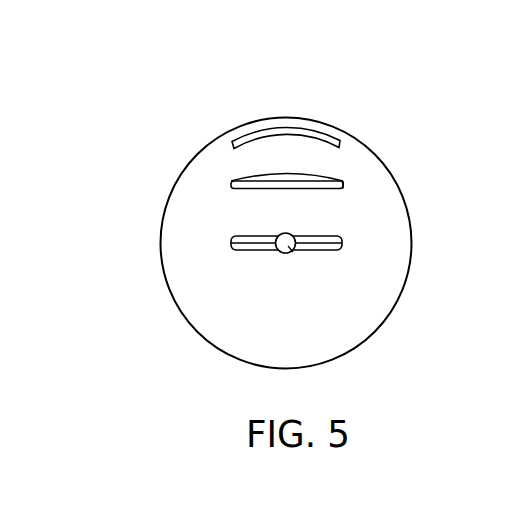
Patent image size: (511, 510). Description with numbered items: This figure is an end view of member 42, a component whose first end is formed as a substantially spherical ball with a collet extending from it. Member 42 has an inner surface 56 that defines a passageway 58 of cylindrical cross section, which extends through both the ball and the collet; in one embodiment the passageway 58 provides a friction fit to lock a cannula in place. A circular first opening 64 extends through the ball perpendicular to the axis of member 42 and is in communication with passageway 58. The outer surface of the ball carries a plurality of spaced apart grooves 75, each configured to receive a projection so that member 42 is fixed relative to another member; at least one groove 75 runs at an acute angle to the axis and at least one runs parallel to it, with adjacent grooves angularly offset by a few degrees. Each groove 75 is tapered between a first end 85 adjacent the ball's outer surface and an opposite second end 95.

The member 42 is at (181, 384).
The inner surface 56 is at (289, 233).
The passageway 58 is at (293, 252).
The first opening 64 is at (278, 254).
The grooves 75 is at (328, 129).
The first end 85 is at (262, 173).
The second end 95 is at (343, 186).